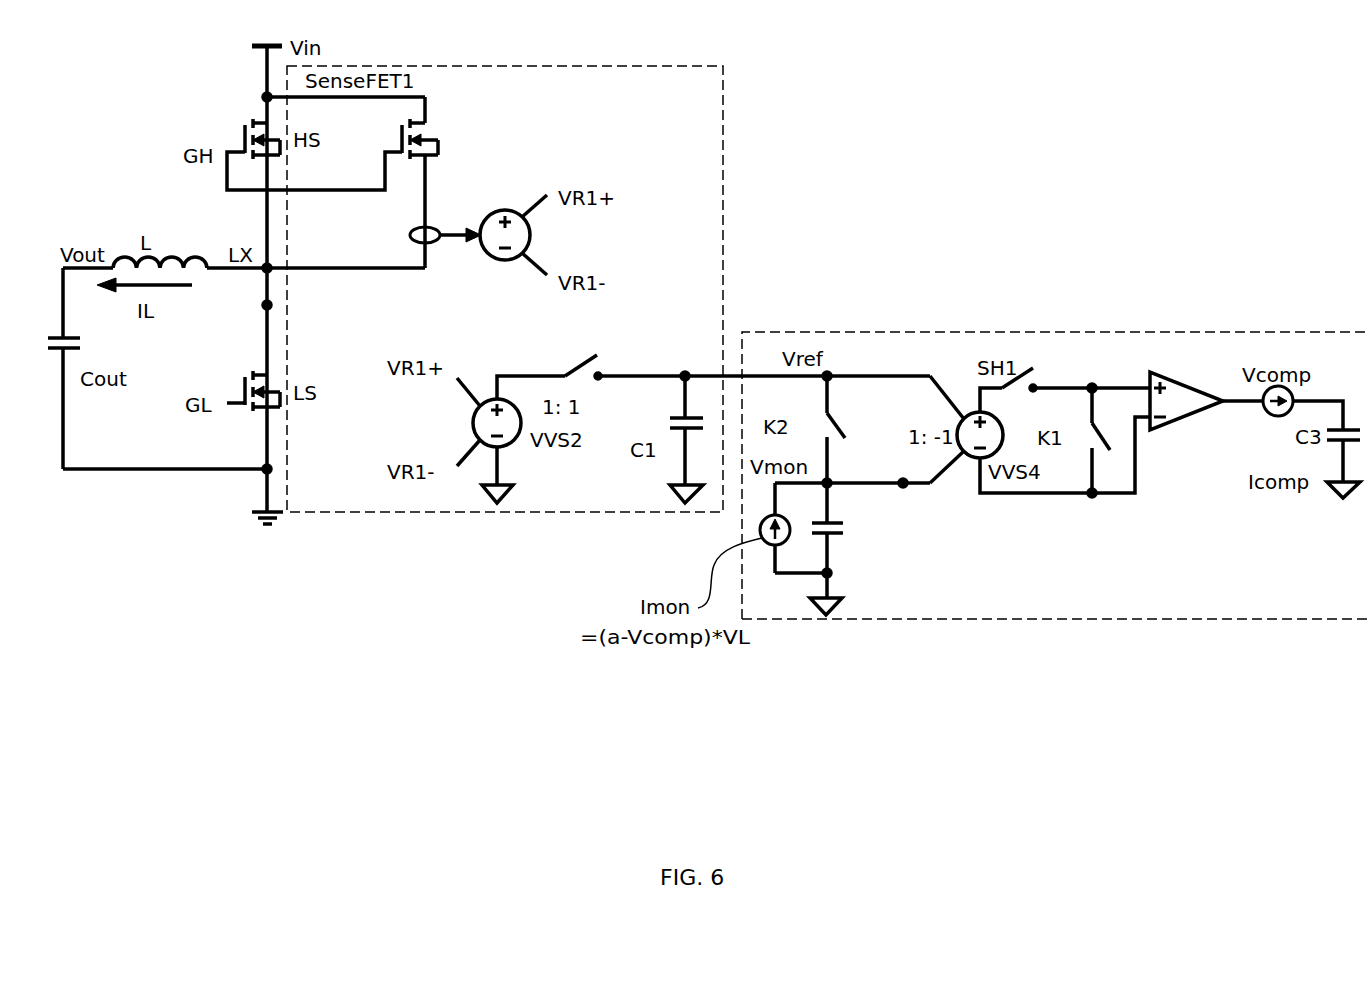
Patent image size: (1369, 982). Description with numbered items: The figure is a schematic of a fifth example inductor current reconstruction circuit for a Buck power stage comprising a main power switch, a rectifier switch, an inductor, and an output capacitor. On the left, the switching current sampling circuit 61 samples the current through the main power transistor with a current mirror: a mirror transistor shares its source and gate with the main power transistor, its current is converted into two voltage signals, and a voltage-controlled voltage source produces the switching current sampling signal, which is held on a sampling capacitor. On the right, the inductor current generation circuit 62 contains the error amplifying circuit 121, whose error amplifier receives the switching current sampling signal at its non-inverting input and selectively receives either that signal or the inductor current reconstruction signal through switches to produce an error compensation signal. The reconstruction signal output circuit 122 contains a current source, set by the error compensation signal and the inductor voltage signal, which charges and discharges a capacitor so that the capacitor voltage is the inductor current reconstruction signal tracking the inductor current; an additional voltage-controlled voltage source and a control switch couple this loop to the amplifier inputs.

The switching current sampling circuit 61 is at (723, 90).
The compensation circuit 62 is at (1147, 615).
The error amplifying circuit 121 is at (1186, 439).
The reconstruction signal output circuit 122 is at (876, 552).